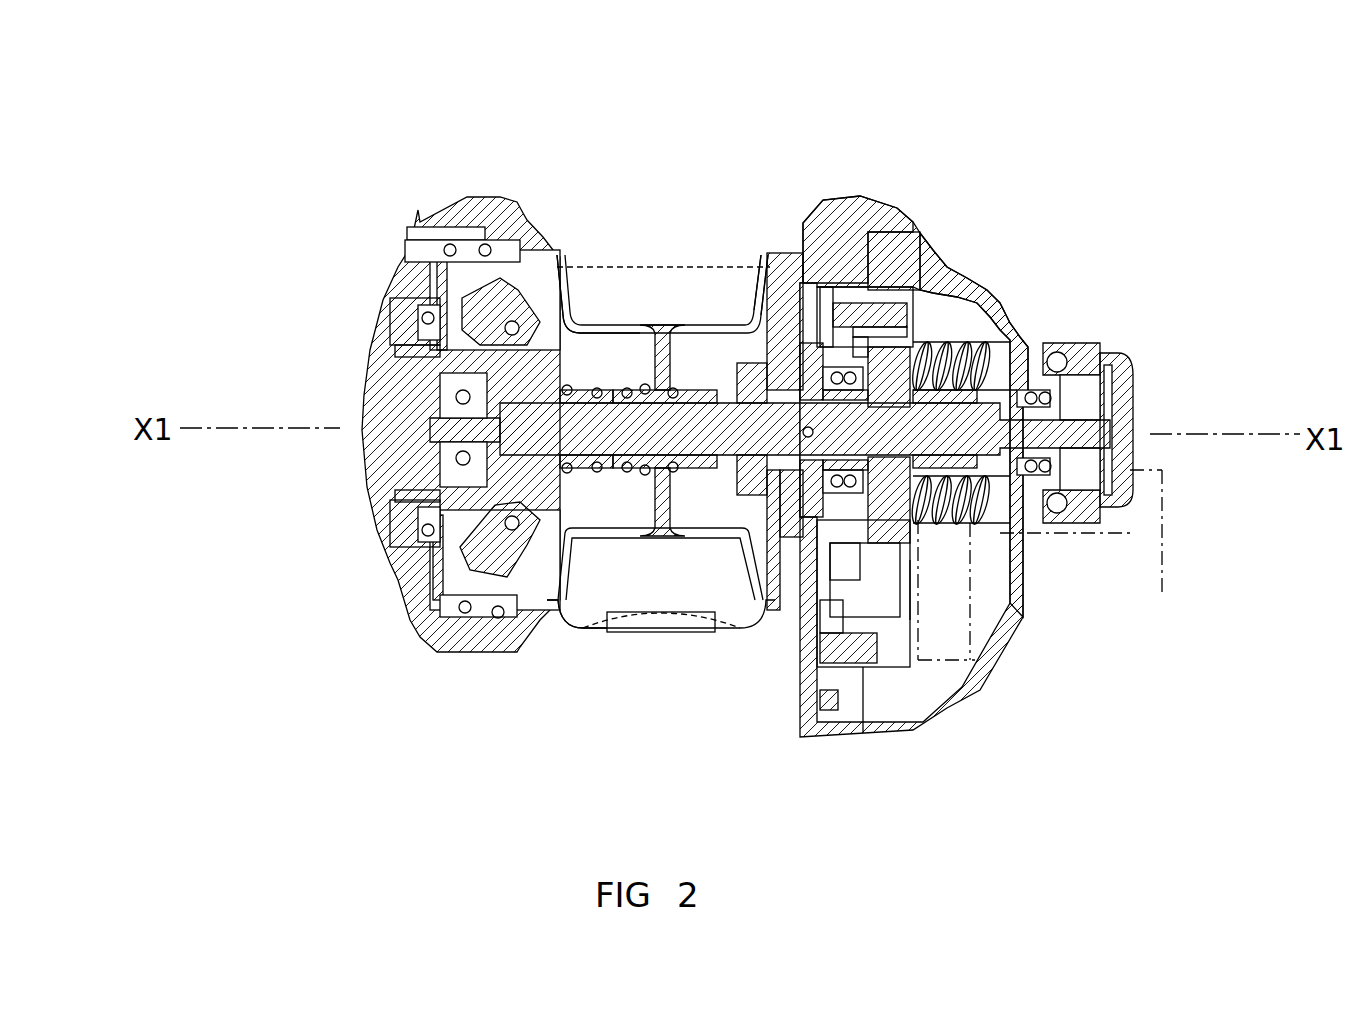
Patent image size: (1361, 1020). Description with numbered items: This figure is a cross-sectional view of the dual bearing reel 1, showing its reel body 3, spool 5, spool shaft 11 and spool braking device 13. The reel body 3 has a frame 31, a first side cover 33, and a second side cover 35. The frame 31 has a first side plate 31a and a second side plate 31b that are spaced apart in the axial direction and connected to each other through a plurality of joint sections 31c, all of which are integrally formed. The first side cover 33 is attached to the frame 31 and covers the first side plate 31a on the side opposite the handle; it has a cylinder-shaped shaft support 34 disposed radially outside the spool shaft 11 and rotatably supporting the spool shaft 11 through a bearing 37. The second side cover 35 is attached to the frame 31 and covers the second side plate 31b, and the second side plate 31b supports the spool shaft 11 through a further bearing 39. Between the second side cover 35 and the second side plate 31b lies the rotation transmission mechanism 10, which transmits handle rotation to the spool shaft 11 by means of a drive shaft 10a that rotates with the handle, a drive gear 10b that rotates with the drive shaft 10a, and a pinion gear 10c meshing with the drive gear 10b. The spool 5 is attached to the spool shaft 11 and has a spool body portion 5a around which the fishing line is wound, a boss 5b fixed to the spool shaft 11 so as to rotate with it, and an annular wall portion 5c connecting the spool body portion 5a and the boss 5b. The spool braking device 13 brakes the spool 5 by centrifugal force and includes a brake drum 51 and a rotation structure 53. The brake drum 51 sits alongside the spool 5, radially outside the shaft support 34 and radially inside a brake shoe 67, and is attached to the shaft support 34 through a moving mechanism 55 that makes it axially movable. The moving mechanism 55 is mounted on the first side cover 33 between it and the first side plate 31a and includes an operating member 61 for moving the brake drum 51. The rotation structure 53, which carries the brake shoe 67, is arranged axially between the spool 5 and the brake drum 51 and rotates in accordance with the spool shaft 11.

The dual bearing reel 1 is at (1004, 409).
The reel body 3 is at (928, 170).
The spool 5 is at (659, 274).
The spool body portion 5a is at (645, 372).
The boss 5b is at (672, 342).
The annular wall portion 5c is at (680, 352).
The rotation transmission mechanism 10 is at (917, 686).
The drive shaft 10a is at (1128, 537).
The drive gear 10b is at (940, 652).
The pinion gear 10c is at (1042, 532).
The spool shaft 11 is at (723, 472).
The spool braking device 13 is at (555, 560).
The frame 31 is at (860, 196).
The first side plate 31a is at (600, 270).
The second side plate 31b is at (790, 290).
The joint sections 31c is at (628, 603).
The first side cover 33 is at (340, 343).
The shaft support 34 is at (410, 312).
The second side cover 35 is at (1010, 296).
The bearing 37 is at (438, 298).
The bearing 39 is at (806, 606).
The brake drum 51 is at (465, 606).
The rotation structure 53 is at (572, 514).
The moving mechanism 55 is at (391, 504).
The operating member 61 is at (407, 580).
The brake shoe 67 is at (493, 295).